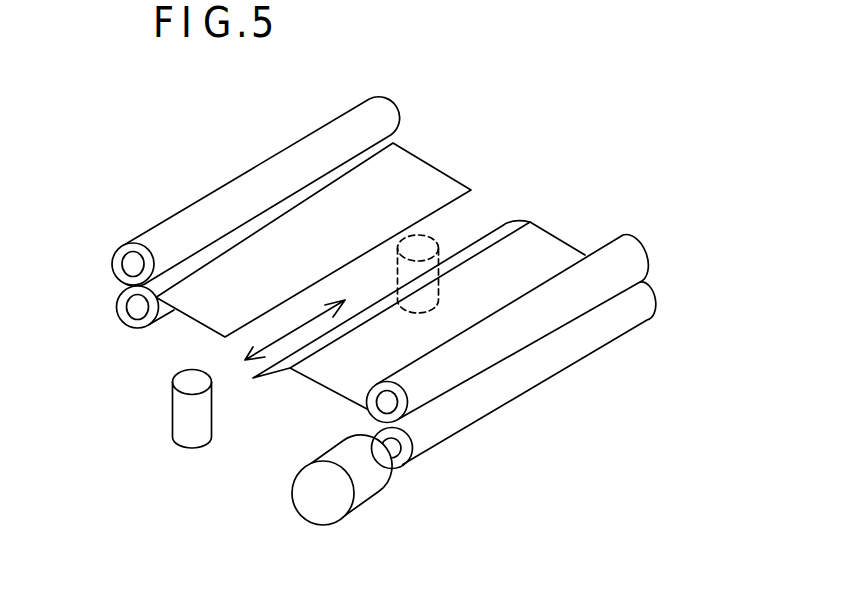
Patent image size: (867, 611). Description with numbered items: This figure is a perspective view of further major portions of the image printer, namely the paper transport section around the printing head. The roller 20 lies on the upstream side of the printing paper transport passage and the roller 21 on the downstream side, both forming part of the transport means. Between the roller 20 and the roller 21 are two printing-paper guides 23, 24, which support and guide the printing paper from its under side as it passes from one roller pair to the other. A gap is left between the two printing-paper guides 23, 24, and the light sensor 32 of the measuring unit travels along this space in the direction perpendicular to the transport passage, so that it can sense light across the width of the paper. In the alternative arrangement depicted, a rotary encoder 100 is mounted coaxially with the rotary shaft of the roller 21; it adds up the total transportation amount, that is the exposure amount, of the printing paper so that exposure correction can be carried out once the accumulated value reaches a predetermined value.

The roller 20 is at (113, 268).
The roller 21 is at (633, 267).
The printing-paper guide 23 is at (448, 178).
The printing-paper guide 24 is at (550, 240).
The light sensor 32 is at (172, 410).
The rotary encoder 100 is at (295, 492).